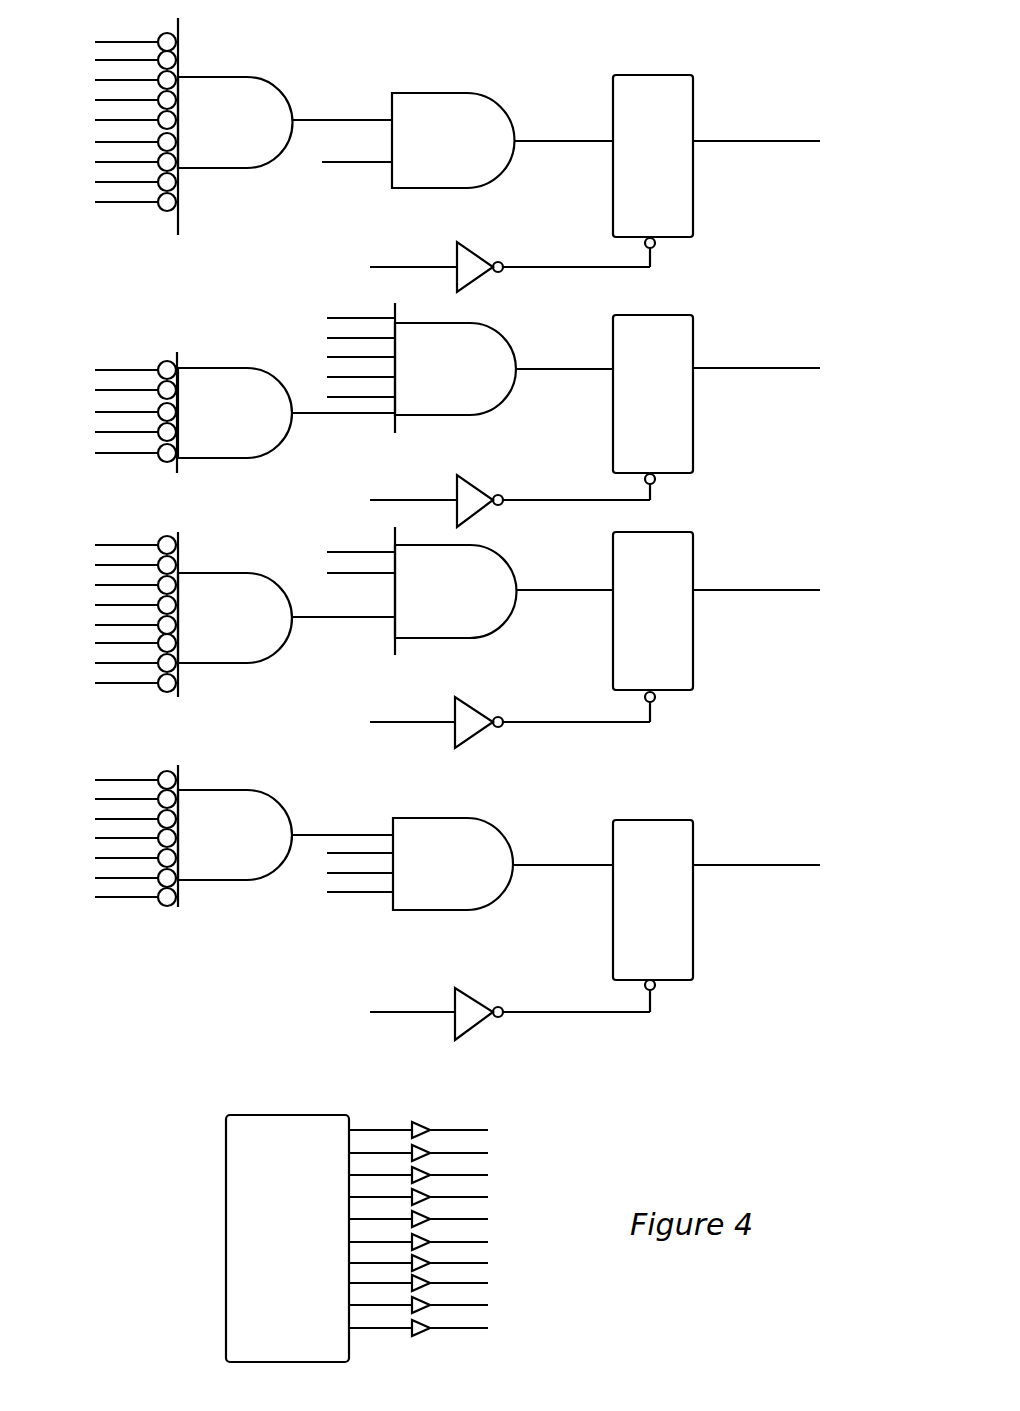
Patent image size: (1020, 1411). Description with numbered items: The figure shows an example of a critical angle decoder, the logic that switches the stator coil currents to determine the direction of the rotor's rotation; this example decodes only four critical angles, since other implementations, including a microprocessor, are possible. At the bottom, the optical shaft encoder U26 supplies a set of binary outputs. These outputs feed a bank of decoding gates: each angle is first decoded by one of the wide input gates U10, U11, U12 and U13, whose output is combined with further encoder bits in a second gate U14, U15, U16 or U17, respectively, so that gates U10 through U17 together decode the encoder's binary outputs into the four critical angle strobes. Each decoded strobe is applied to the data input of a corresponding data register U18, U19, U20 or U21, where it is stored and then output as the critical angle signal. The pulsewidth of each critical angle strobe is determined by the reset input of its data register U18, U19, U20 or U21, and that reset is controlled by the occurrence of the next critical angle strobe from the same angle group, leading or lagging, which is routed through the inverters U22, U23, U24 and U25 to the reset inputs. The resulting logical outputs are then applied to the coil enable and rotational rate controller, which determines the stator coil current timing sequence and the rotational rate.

The decoder gate U10 is at (243, 126).
The decoder gate U11 is at (245, 412).
The decoder gate U12 is at (245, 613).
The decoder gate U13 is at (244, 835).
The decoder gate U14 is at (467, 140).
The decoder gate U15 is at (470, 367).
The decoder gate U16 is at (470, 591).
The decoder gate U17 is at (470, 864).
The data register U18 is at (716, 171).
The data register U19 is at (716, 407).
The data register U20 is at (716, 627).
The data register U21 is at (716, 916).
The inverter U22 is at (508, 256).
The inverter U23 is at (508, 490).
The inverter U24 is at (508, 712).
The inverter U25 is at (508, 1003).
The optical shaft encoder U26 is at (357, 1238).